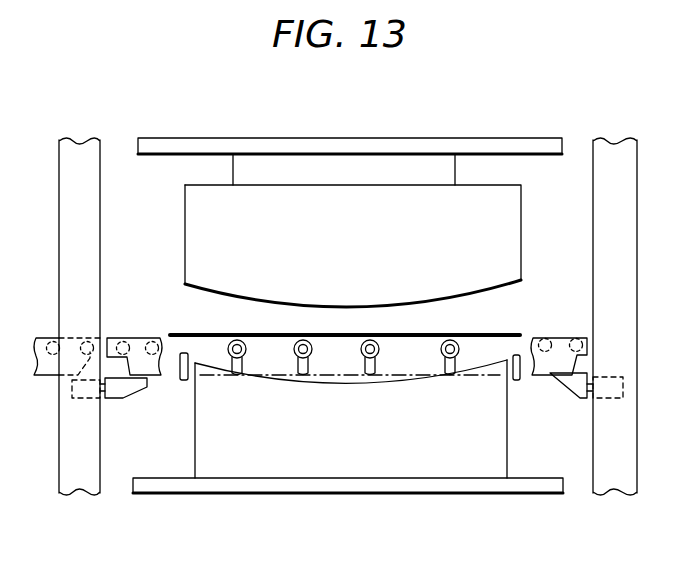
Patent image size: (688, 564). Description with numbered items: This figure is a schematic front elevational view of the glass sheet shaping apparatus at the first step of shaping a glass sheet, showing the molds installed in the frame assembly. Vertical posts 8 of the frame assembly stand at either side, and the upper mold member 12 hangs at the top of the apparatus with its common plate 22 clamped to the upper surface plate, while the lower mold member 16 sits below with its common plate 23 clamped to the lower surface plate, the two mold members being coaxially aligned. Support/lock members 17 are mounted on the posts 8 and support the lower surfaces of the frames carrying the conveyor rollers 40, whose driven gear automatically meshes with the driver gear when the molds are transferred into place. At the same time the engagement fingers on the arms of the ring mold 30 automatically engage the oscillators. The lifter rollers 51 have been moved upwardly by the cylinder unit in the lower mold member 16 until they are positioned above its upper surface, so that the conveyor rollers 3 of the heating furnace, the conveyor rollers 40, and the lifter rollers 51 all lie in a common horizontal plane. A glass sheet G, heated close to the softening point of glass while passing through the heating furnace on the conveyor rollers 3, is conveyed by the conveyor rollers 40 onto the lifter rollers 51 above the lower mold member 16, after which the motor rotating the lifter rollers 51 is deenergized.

The conveyor rollers 3 is at (52, 340).
The posts 8 is at (70, 194).
The upper mold member 12 is at (355, 195).
The lower mold member 16 is at (352, 468).
The support/lock members 17 is at (126, 393).
The common plate 22 is at (216, 142).
The common plate 23 is at (441, 487).
The ring mold 30 is at (180, 382).
The conveyor rollers 40 is at (124, 340).
The lifter rollers 51 is at (235, 341).
The glass sheet G is at (505, 334).